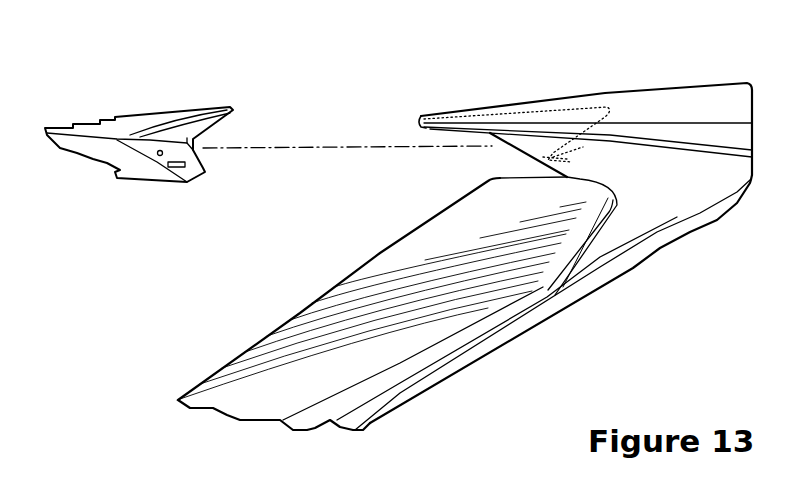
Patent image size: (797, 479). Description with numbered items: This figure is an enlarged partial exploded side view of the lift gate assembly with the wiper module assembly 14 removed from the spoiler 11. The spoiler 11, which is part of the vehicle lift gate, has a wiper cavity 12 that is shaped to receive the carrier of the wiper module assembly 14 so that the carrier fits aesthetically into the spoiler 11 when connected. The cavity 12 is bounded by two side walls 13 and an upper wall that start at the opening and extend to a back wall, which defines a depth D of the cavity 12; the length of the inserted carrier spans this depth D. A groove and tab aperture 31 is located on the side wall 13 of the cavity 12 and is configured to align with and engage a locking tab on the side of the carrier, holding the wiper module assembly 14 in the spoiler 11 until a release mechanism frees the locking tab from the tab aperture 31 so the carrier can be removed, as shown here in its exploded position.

The spoiler 11 is at (642, 102).
The cavity 12 is at (500, 160).
The side wall 13 is at (543, 152).
The wiper module assembly 14 is at (96, 166).
The tab aperture 31 is at (513, 160).
The depth D is at (583, 97).